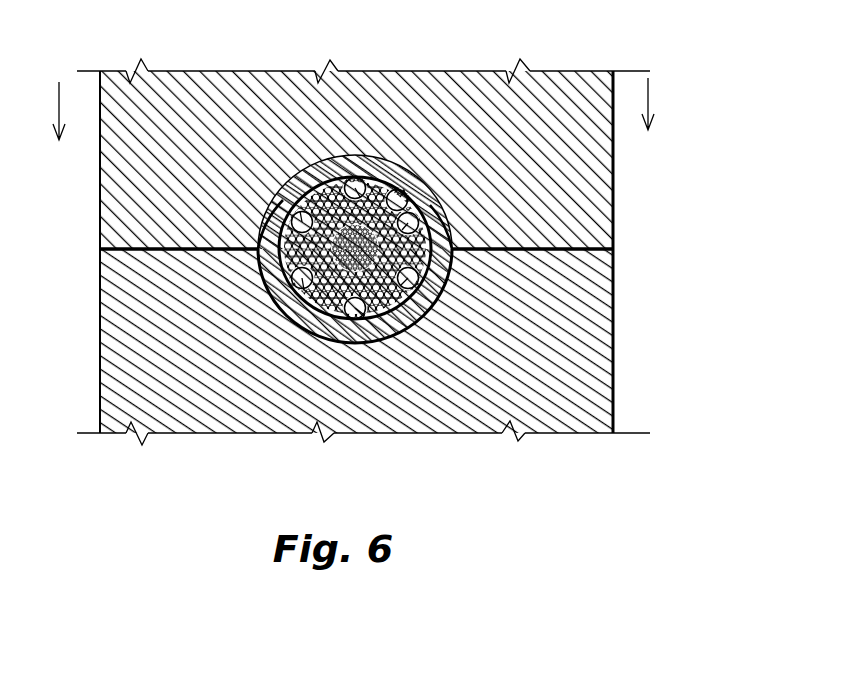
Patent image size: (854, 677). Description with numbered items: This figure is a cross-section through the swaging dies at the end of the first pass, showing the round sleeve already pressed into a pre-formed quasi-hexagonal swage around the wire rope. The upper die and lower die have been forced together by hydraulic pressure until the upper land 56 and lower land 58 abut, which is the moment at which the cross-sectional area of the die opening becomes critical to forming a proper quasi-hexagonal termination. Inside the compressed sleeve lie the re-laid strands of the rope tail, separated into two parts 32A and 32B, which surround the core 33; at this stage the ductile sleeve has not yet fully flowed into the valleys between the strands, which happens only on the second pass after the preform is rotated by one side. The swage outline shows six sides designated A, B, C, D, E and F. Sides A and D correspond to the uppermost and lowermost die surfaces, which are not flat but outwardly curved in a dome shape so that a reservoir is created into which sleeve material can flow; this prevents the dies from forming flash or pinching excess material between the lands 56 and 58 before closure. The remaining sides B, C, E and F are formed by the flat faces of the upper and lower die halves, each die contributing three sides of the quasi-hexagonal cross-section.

The upper land 56 is at (566, 252).
The lower land 58 is at (543, 256).
The first part of tail end strands 32A is at (440, 222).
The second part of tail end strands 32B is at (300, 165).
The core 33 is at (397, 200).
The side A of quasi-hexagonal swage A is at (358, 156).
The side B of quasi-hexagonal swage B is at (400, 180).
The side C of quasi-hexagonal swage C is at (470, 325).
The side D of quasi-hexagonal swage D is at (350, 350).
The side E of quasi-hexagonal swage E is at (300, 296).
The side F of quasi-hexagonal swage F is at (278, 200).